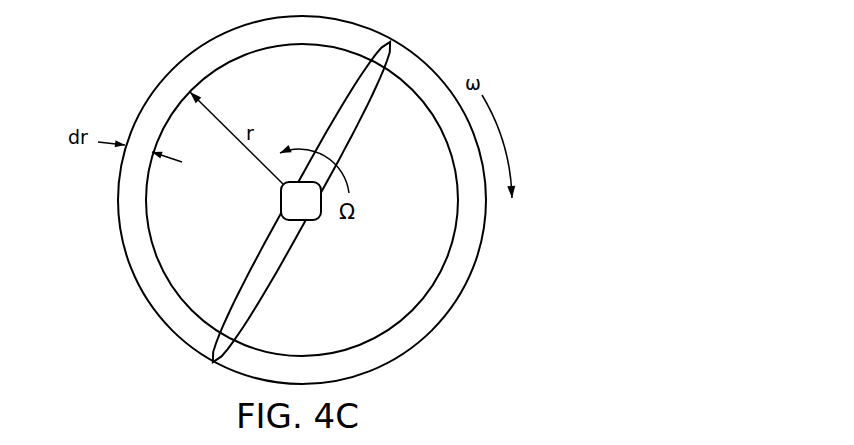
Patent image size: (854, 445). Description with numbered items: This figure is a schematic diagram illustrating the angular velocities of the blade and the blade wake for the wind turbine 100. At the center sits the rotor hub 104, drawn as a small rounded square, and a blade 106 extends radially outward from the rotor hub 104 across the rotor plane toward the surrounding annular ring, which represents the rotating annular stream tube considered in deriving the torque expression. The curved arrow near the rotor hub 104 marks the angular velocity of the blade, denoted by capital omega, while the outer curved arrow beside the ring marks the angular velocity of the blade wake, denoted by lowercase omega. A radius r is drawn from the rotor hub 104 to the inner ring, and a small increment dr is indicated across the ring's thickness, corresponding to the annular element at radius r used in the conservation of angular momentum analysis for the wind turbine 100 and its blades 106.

The wind turbine 100 is at (332, 238).
The rotor hub 104 is at (281, 198).
The blade 106 is at (393, 51).